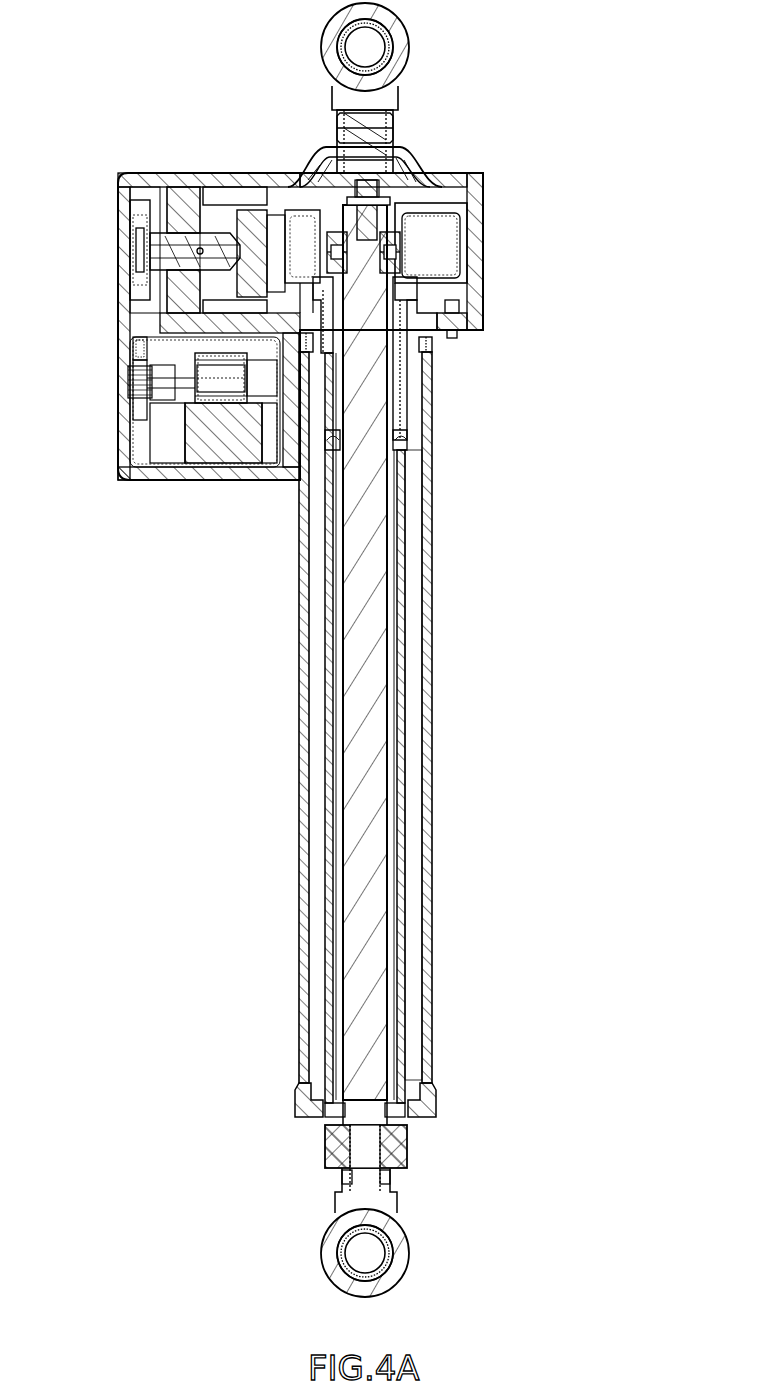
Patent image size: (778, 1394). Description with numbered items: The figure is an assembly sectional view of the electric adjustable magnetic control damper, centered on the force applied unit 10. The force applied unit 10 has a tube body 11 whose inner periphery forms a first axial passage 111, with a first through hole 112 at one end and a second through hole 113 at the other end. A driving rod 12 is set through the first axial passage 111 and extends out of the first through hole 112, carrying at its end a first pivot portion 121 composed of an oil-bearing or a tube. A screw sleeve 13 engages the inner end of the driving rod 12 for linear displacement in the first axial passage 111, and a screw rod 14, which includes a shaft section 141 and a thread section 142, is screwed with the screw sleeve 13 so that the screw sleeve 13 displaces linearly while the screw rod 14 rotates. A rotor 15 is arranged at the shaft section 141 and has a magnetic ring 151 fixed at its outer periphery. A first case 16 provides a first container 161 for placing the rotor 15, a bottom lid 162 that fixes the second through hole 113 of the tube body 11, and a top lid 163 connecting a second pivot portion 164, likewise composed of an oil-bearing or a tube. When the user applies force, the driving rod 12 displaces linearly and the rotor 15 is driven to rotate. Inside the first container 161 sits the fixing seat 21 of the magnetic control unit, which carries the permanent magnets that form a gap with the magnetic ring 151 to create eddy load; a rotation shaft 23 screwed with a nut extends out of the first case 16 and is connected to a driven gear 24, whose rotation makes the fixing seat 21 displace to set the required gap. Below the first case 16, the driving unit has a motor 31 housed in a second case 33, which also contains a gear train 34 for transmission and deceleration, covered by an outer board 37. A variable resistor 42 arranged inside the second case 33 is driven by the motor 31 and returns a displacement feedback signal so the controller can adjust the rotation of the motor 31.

The force applied unit 10 is at (313, 650).
The tube body 11 is at (428, 788).
The first axial passage 111 is at (412, 515).
The first through hole 112 is at (432, 1093).
The second through hole 113 is at (424, 352).
The driving rod 12 is at (402, 860).
The first pivot portion 121 is at (378, 1226).
The screw sleeve 13 is at (395, 372).
The screw rod 14 is at (374, 743).
The shaft section 141 is at (365, 253).
The thread section 142 is at (386, 410).
The rotor 15 is at (445, 208).
The magnetic ring 151 is at (445, 278).
The first case 16 is at (476, 200).
The first container 161 is at (458, 214).
The bottom lid 162 is at (473, 322).
The top lid 163 is at (446, 178).
The second pivot portion 164 is at (372, 43).
The fixing seat 21 is at (238, 222).
The rotation shaft 23 is at (178, 250).
The driven gear 24 is at (135, 225).
The motor 31 is at (247, 440).
The second case 33 is at (203, 473).
The gear train 34 is at (132, 382).
The outer board 37 is at (137, 363).
The variable resistor 42 is at (217, 377).